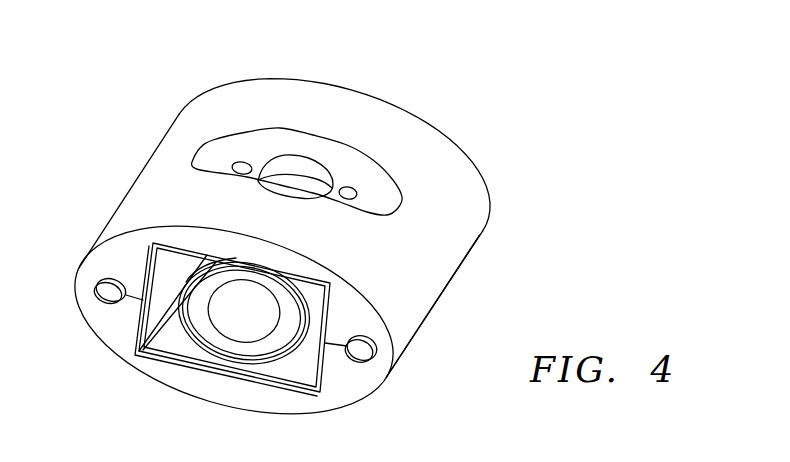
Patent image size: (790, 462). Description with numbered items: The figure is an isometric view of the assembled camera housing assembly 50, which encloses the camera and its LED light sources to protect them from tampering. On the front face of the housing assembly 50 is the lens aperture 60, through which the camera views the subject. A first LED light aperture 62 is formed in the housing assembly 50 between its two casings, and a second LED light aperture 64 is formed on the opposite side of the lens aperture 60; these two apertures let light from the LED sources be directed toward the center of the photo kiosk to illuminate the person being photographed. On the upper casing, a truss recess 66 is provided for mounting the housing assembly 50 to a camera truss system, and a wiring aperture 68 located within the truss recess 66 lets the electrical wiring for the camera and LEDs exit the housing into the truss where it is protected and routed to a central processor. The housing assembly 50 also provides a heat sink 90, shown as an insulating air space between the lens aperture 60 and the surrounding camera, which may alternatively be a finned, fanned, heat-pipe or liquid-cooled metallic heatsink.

The camera housing assembly 50 is at (424, 64).
The lens aperture 60 is at (166, 364).
The first LED light aperture 62 is at (372, 372).
The second LED light aperture 64 is at (95, 283).
The truss recess 66 is at (368, 172).
The wiring aperture 68 is at (296, 166).
The heat sink 90 is at (302, 370).